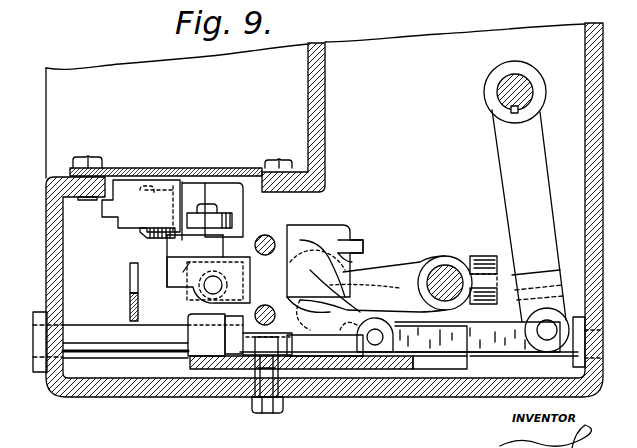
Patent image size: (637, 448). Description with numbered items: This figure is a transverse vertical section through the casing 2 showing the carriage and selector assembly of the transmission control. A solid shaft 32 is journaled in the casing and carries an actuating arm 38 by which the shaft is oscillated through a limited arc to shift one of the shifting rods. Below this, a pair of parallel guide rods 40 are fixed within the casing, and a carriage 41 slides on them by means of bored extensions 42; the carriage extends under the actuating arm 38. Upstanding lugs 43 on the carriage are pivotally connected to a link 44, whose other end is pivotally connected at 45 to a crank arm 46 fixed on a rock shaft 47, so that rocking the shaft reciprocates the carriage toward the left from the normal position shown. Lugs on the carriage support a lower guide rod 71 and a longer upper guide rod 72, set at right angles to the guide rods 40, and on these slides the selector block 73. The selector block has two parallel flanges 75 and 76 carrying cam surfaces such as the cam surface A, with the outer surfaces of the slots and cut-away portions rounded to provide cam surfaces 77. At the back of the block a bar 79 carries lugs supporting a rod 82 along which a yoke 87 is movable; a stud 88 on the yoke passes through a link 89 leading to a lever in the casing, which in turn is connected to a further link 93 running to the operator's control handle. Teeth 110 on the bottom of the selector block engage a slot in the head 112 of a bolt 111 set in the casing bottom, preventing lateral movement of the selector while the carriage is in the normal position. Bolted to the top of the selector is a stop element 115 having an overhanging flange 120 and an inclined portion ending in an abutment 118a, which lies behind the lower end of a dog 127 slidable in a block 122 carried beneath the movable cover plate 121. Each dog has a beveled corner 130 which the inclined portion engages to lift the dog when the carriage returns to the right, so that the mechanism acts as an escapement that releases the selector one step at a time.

The casing 2 is at (598, 127).
The solid shaft 32 is at (448, 272).
The actuating arm 38 is at (398, 280).
The guide rods 40 is at (133, 352).
The carriage 41 is at (402, 355).
The extensions 42 is at (196, 340).
The upstanding lugs 43 is at (352, 370).
The link 44 is at (512, 348).
The pivotal connection 45 is at (547, 332).
The crank arm 46 is at (515, 187).
The rock shaft 47 is at (500, 96).
The lower guide rod 71 is at (269, 304).
The upper guide rod 72 is at (294, 238).
The selector block 73 is at (269, 261).
The upper flange 75 is at (366, 246).
The flange 76 is at (368, 330).
The rounded cam portions 77 is at (350, 243).
The bar 79 is at (176, 265).
The rod 82 is at (210, 285).
The yoke 87 is at (188, 272).
The stud 88 is at (200, 199).
The link 89 is at (233, 221).
The link 93 is at (130, 294).
The teeth 110 is at (255, 340).
The bolt 111 is at (270, 413).
The bolt head 112 is at (262, 372).
The stop element 115 is at (165, 261).
The abutment 118a is at (197, 246).
The overhanging flange 120 is at (229, 183).
The cover plate 121 is at (118, 168).
The block 122 is at (170, 185).
The dog 127 is at (163, 248).
The beveled corner portion 130 is at (140, 237).
The cam surface A is at (312, 355).